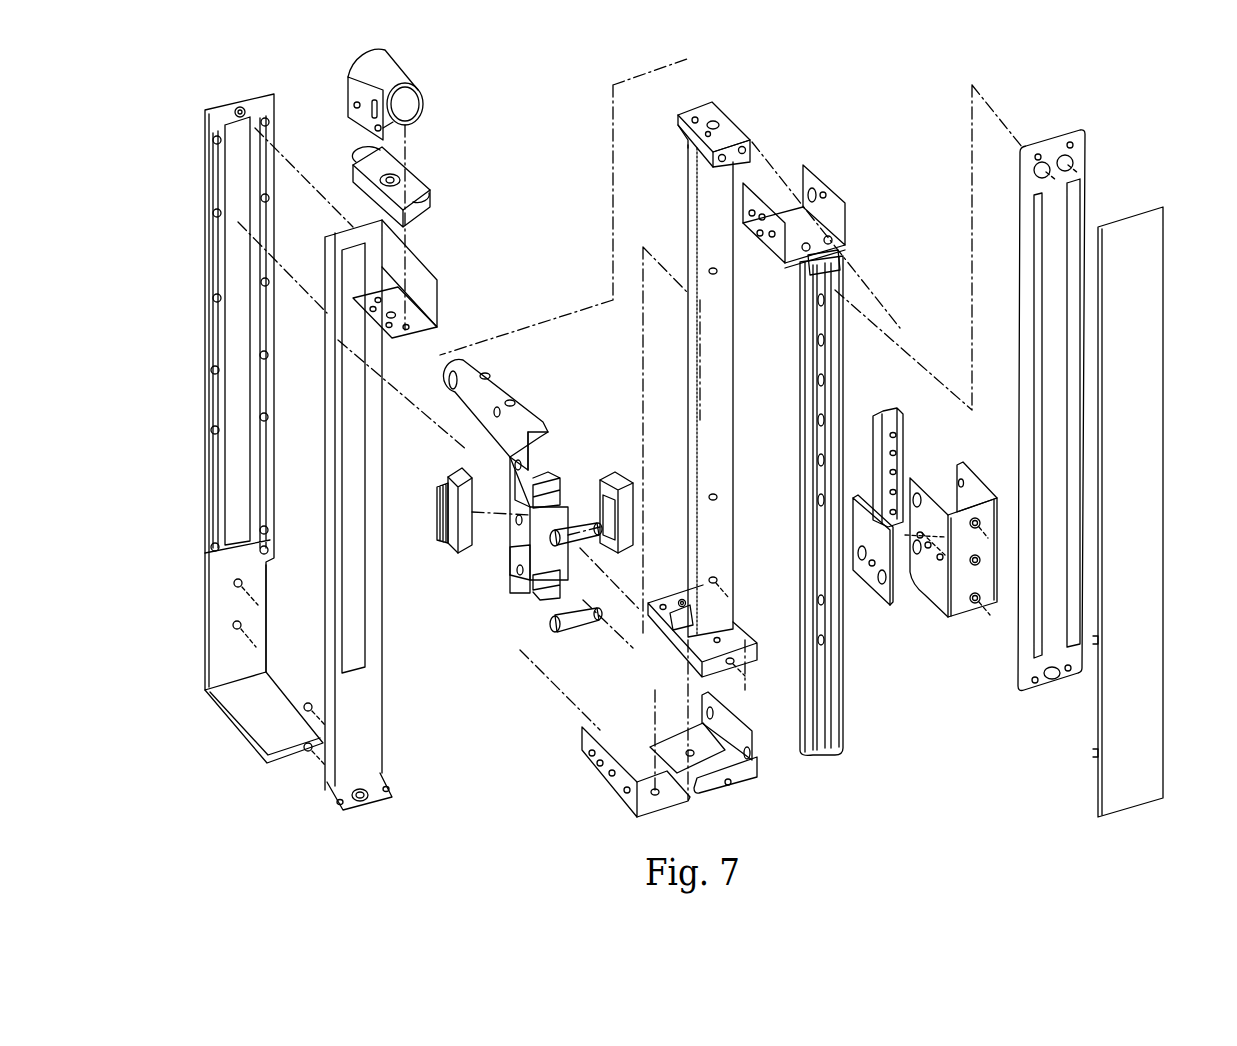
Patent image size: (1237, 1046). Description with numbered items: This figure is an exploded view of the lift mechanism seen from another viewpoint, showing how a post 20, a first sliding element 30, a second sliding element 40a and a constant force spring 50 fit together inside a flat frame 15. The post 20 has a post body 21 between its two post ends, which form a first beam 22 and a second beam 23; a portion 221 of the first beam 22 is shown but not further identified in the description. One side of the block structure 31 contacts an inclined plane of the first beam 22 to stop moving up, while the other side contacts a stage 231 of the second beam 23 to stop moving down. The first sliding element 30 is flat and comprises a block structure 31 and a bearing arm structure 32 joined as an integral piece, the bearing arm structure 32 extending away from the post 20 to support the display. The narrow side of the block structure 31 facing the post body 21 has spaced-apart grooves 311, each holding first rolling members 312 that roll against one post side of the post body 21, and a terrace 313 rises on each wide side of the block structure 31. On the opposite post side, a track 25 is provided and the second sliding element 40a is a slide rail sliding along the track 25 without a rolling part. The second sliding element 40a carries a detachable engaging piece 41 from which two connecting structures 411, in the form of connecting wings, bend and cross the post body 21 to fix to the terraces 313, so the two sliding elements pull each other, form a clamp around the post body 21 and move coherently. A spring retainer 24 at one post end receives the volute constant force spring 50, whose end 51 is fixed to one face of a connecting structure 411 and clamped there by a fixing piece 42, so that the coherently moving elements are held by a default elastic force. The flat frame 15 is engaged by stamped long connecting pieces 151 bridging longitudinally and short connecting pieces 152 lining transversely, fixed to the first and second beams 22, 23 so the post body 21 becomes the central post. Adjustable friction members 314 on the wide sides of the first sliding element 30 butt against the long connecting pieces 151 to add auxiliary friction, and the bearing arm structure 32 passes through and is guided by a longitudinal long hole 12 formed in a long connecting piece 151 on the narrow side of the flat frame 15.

The longitudinal long hole 12 is at (350, 478).
The flat frame 15 is at (1150, 125).
The long connecting piece 151 is at (327, 782).
The short connecting piece 152 is at (762, 180).
The post 20 is at (737, 437).
The post body 21 is at (688, 180).
The first beam 22 is at (683, 119).
The cap protrusion 221 is at (708, 105).
The second beam 23 is at (692, 615).
The stage 231 is at (680, 600).
The spring retainer 24 is at (405, 182).
The track 25 is at (838, 700).
The first sliding element 30 is at (515, 542).
The block structure 31 is at (512, 548).
The groove 311 is at (562, 485).
The first rolling member 312 is at (572, 548).
The terrace 313 is at (515, 585).
The adjustable friction member 314 is at (440, 488).
The bearing arm structure 32 is at (505, 390).
The second sliding element 40a is at (930, 492).
The engaging piece 41 is at (949, 551).
The connecting structure 411 is at (928, 595).
The fixing piece 42 is at (875, 585).
The constant force spring 50 is at (413, 138).
The end 51 is at (355, 98).